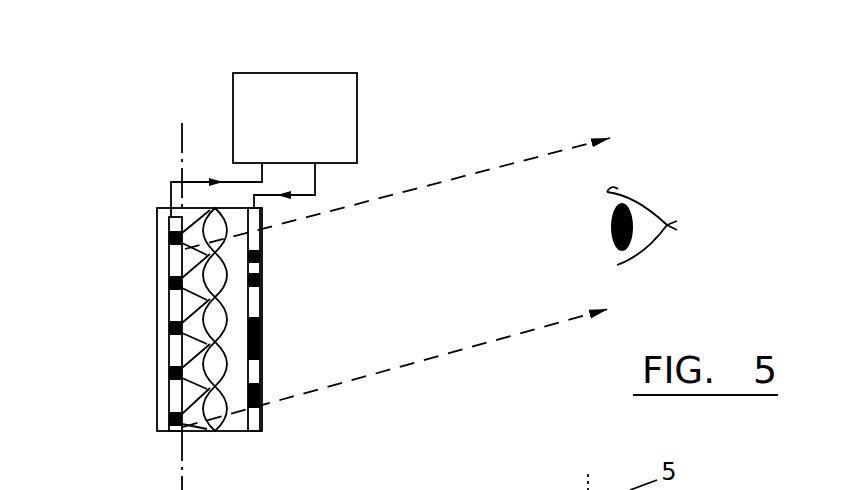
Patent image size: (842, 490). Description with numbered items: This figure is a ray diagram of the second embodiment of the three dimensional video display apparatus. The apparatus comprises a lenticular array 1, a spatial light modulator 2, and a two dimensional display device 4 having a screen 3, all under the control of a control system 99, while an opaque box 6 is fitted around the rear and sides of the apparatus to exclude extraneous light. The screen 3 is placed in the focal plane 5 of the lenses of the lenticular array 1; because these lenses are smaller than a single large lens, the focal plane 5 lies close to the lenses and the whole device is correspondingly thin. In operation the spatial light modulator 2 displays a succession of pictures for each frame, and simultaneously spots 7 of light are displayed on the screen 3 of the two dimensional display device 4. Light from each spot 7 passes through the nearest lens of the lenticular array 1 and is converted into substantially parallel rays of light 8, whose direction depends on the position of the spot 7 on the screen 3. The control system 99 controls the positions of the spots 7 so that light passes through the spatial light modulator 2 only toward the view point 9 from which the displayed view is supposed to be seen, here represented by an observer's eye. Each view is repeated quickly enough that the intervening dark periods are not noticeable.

The lenticular array 1 is at (217, 352).
The spatial light modulator 2 is at (253, 242).
The screen 3 is at (175, 310).
The two dimensional display device 4 is at (166, 282).
The focal plane 5 is at (182, 162).
The opaque box 6 is at (237, 207).
The spots of light 7 is at (170, 328).
The parallel rays of light 8 is at (428, 182).
The view point 9 is at (627, 207).
The control system 99 is at (233, 73).